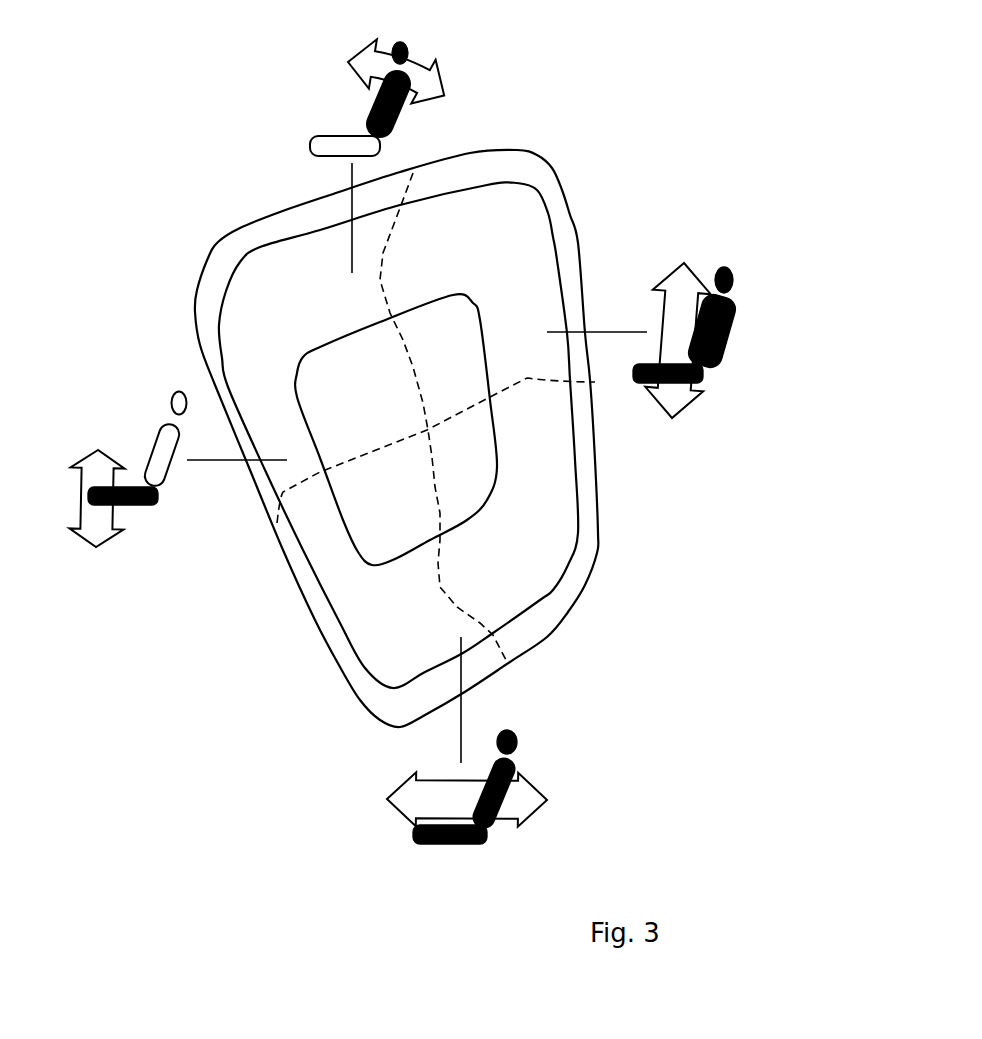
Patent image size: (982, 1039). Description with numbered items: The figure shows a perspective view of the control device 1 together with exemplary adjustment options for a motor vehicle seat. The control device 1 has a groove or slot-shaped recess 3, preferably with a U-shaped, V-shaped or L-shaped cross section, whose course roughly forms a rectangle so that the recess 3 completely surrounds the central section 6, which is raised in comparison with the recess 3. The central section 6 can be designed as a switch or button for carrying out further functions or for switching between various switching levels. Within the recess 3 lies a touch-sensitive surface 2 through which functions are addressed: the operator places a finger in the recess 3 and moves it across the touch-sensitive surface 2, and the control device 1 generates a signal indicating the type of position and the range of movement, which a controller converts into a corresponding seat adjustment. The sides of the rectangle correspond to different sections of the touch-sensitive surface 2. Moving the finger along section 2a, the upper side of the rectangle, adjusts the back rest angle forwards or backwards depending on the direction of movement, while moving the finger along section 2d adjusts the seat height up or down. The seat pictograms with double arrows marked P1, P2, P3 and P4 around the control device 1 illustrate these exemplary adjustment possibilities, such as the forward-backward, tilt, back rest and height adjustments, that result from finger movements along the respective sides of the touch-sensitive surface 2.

The control device 1 is at (303, 693).
The touch-sensitive surface 2 is at (537, 553).
The section of the touch-sensitive surface 2a is at (430, 225).
The section of the touch-sensitive surface 2d is at (530, 287).
The recess 3 is at (547, 637).
The central section 6 is at (477, 470).
The first occupant position P1 is at (543, 790).
The second occupant position P2 is at (692, 257).
The third occupant position P3 is at (452, 72).
The fourth occupant position P4 is at (122, 543).